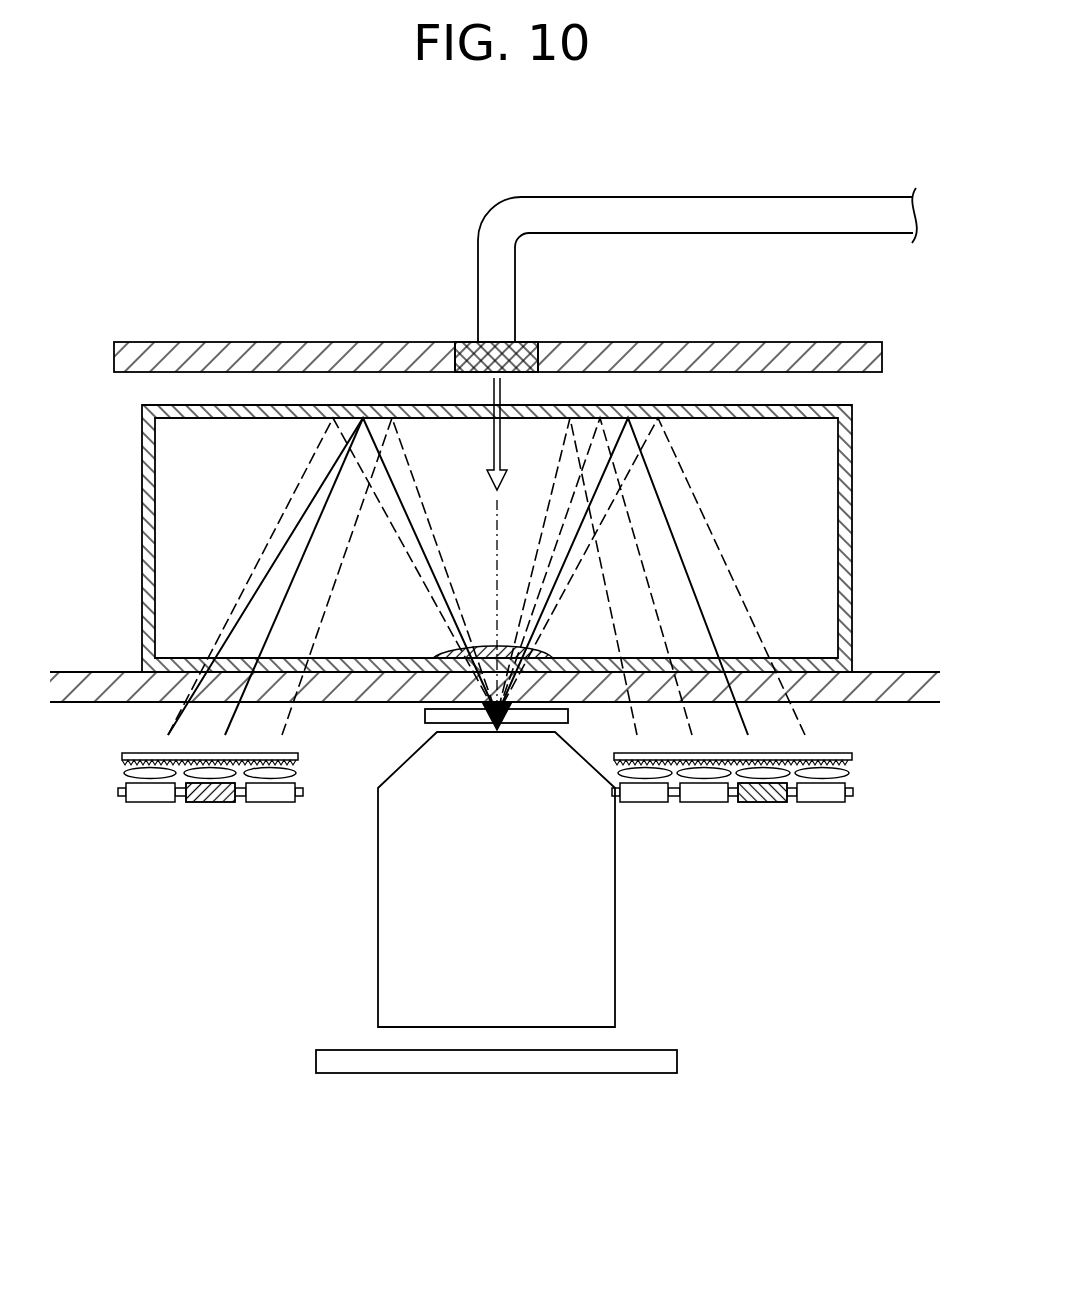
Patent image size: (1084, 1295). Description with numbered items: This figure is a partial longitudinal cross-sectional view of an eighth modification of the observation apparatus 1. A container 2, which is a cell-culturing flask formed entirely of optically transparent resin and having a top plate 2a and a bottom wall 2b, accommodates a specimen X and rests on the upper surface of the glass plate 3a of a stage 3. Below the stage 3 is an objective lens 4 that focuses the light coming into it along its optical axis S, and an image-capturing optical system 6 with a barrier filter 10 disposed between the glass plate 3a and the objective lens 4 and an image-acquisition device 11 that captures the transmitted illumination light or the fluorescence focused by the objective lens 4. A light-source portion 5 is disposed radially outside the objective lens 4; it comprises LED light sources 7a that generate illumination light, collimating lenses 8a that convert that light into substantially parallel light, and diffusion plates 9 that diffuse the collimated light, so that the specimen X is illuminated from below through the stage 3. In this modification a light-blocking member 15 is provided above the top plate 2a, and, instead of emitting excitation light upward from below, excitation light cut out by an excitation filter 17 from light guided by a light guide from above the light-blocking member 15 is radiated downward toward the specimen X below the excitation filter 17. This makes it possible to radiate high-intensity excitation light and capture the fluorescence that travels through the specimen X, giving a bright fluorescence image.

The observation apparatus 1 is at (127, 247).
The container 2 is at (549, 518).
The top plate 2a is at (852, 405).
The chamber bottom wall 2b is at (815, 658).
The stage 3 is at (495, 636).
The glass plate 3a is at (105, 672).
The objective lens 4 is at (615, 985).
The light-source portion 5 is at (846, 836).
The image-capturing optical system 6 is at (620, 929).
The LED light source 7a is at (150, 802).
The collimating lens 8a is at (124, 773).
The diffusion plate 9 is at (140, 753).
The barrier filter 10 is at (540, 726).
The image-acquisition device 11 is at (505, 1073).
The light-blocking member 15 is at (310, 342).
The excitation filter 17 is at (467, 373).
The optical axis S is at (510, 602).
The specimen X is at (495, 645).